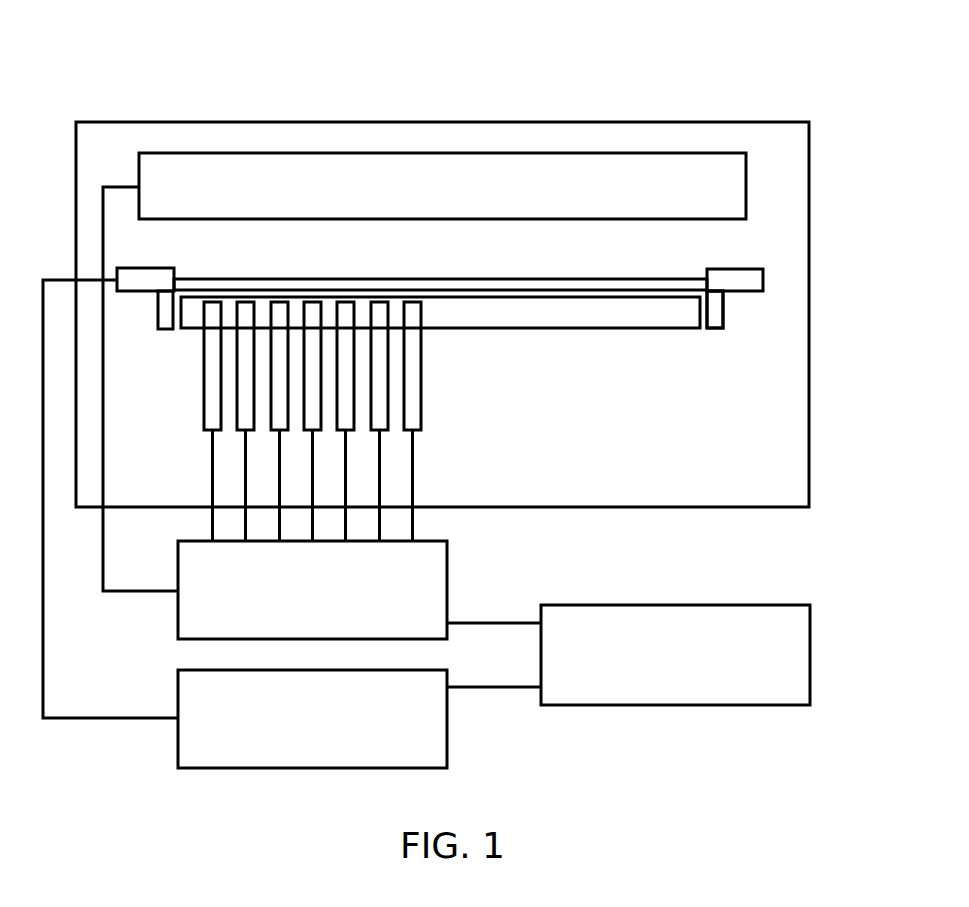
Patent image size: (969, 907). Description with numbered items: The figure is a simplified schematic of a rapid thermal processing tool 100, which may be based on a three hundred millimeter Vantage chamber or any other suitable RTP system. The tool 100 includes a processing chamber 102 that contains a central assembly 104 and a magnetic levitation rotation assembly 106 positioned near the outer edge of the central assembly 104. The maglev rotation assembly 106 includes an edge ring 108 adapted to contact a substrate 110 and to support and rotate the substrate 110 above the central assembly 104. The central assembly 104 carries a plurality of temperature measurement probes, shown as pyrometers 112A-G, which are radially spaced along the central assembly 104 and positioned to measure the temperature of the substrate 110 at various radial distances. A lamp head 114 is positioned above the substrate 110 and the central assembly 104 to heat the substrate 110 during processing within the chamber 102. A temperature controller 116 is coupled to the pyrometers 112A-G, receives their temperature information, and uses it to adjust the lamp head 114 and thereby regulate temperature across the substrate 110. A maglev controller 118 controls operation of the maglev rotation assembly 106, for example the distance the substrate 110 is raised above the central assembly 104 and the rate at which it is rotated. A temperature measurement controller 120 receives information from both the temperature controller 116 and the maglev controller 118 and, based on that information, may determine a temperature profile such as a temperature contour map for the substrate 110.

The rapid thermal processing (RTP) tool 100 is at (106, 64).
The processing chamber 102 is at (809, 143).
The central assembly 104 is at (628, 329).
The magnetic levitation (maglev) rotation assembly 106 is at (755, 330).
The edge ring 108 is at (731, 269).
The substrate 110 is at (612, 278).
The pyrometers 112A-G is at (443, 402).
The lamp head 114 is at (609, 155).
The temperature controller 116 is at (447, 575).
The maglev controller 118 is at (255, 768).
The temperature measurement controller 120 is at (657, 705).